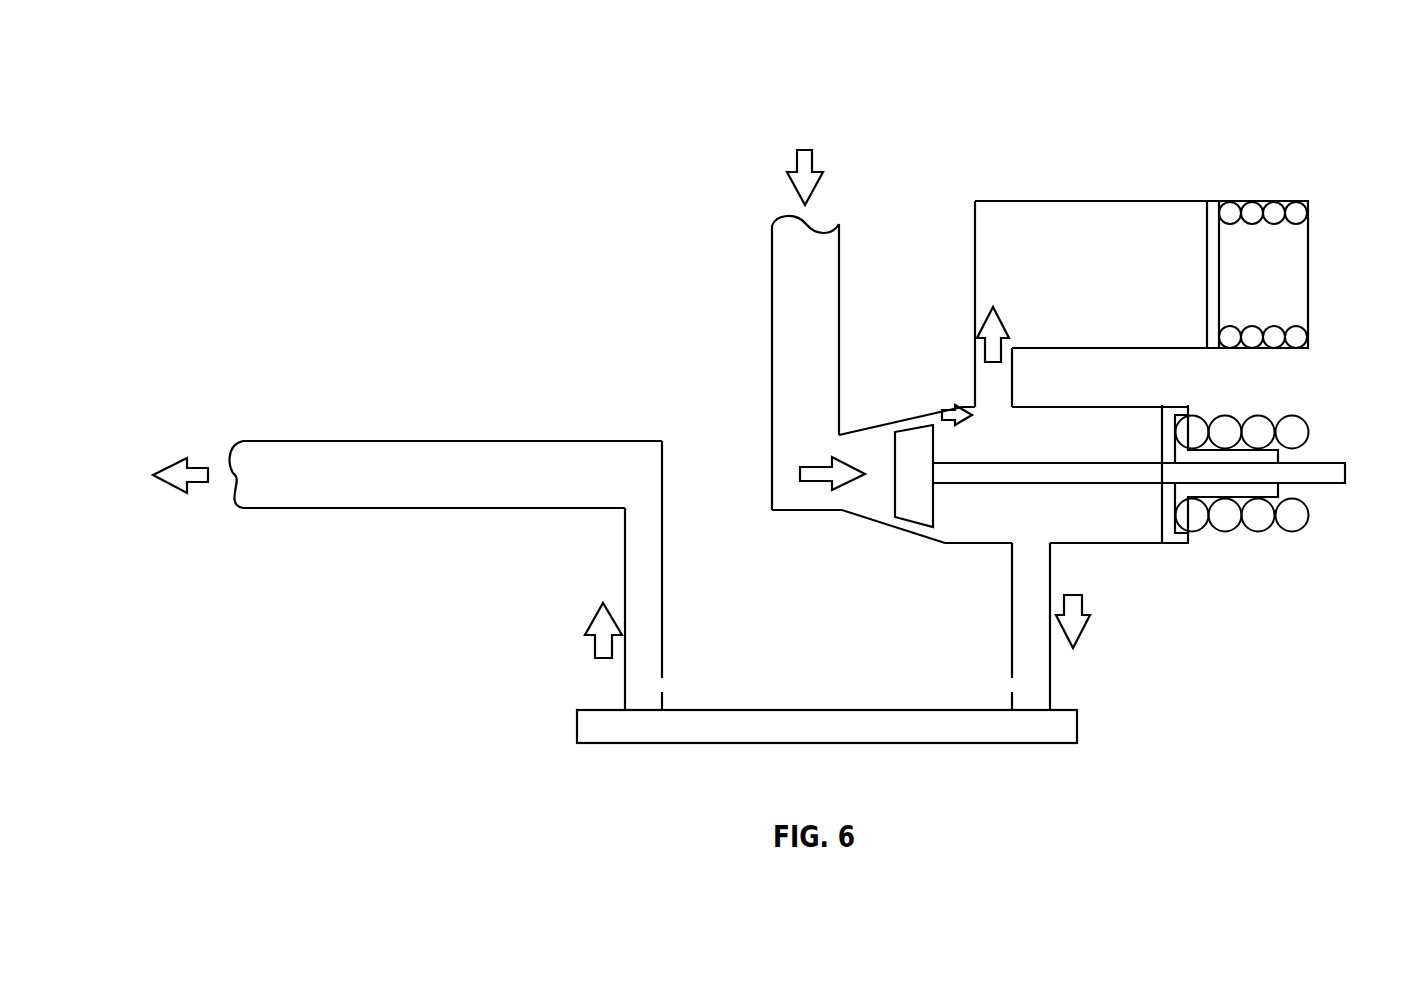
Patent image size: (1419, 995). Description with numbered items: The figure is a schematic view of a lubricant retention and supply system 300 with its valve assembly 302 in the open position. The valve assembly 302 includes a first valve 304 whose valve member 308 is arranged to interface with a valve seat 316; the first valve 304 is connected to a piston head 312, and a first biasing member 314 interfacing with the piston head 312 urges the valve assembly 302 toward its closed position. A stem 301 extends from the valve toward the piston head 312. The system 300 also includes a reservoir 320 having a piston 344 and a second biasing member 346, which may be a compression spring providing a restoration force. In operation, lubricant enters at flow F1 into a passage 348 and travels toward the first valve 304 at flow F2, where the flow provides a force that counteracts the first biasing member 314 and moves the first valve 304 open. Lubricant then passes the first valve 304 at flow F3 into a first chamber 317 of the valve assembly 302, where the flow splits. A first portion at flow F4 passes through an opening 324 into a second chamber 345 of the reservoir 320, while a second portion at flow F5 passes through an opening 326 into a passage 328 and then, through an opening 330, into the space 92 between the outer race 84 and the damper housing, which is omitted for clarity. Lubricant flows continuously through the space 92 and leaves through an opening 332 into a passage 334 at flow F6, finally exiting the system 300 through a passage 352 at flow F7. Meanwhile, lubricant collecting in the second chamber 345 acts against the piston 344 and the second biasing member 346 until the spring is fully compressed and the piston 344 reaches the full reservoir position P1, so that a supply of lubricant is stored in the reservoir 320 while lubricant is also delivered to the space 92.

The lubricant retention and supply system 300 is at (260, 83).
The outer race 84 is at (1065, 727).
The space 92 is at (694, 575).
The rod 301 is at (1017, 484).
The valve assembly 302 is at (1126, 489).
The first valve 304 is at (886, 535).
The valve member 308 is at (912, 524).
The piston head 312 is at (1168, 413).
The first biasing member 314 is at (1290, 415).
The valve seat 316 is at (862, 521).
The first chamber 317 is at (1065, 509).
The reservoir 320 is at (1057, 201).
The opening 324 is at (990, 410).
The opening 326 is at (1028, 548).
The passage 328 is at (1050, 697).
The opening 330 is at (1010, 686).
The opening 332 is at (664, 686).
The passage 334 is at (625, 543).
The piston 344 is at (1219, 253).
The second chamber 345 is at (1044, 304).
The second biasing member 346 is at (1297, 213).
The passage 348 is at (840, 262).
The passage 352 is at (487, 441).
The flow F1 is at (800, 162).
The flow F2 is at (818, 470).
The flow F3 is at (945, 408).
The flow F4 is at (995, 327).
The flow F5 is at (1078, 631).
The flow F6 is at (592, 622).
The flow F7 is at (183, 463).
The full reservoir position P1 is at (1213, 212).